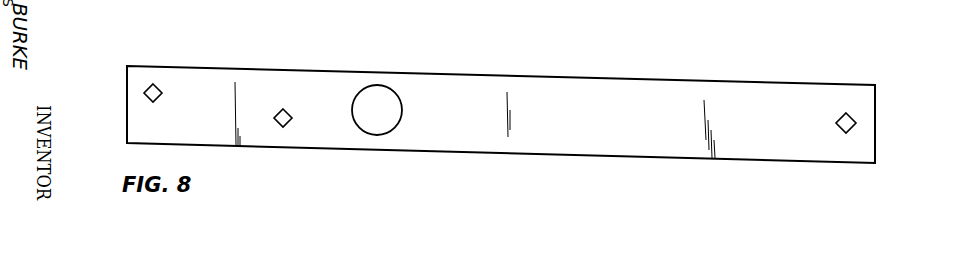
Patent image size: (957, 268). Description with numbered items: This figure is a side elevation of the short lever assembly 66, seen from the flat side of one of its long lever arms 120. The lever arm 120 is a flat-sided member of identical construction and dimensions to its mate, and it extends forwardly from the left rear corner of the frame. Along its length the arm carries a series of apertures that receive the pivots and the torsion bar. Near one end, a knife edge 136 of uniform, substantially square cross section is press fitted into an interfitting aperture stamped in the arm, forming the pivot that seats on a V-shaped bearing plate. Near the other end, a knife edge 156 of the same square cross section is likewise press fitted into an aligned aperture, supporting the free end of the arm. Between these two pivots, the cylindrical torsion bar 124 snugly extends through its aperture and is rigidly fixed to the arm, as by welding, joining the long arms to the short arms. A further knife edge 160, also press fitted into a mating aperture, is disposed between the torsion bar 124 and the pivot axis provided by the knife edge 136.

The long lever arm 120 is at (605, 122).
The lever assembly 66 is at (570, 159).
The knife edge 136 is at (159, 98).
The knife edge 160 is at (289, 112).
The torsion bar 124 is at (398, 112).
The knife edge 156 is at (855, 119).